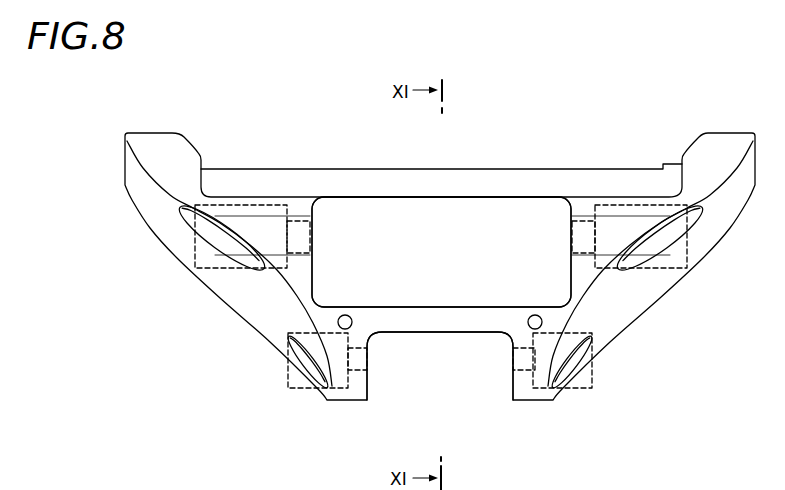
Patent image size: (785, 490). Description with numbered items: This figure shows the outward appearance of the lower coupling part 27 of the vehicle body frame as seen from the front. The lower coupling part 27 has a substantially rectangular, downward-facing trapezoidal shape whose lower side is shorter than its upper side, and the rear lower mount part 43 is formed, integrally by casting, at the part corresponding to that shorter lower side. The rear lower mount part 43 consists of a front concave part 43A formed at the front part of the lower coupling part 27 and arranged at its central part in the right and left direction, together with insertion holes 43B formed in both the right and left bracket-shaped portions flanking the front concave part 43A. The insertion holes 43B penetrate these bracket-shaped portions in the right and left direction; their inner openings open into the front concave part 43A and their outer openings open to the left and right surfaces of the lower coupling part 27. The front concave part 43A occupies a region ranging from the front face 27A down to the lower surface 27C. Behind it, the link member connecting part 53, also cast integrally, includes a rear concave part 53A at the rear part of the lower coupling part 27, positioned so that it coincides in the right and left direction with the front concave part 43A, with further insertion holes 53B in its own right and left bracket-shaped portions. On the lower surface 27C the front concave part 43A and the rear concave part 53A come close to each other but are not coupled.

The lower coupling part 27 is at (110, 125).
The front face 27A is at (293, 208).
The lower surface 27C is at (397, 322).
The rear lower mount part 43 is at (488, 218).
The front concave part 43A is at (450, 248).
The insertion holes 43B is at (313, 228).
The link member connecting part 53 is at (527, 418).
The rear concave part 53A is at (450, 333).
The insertion holes 53B is at (357, 370).